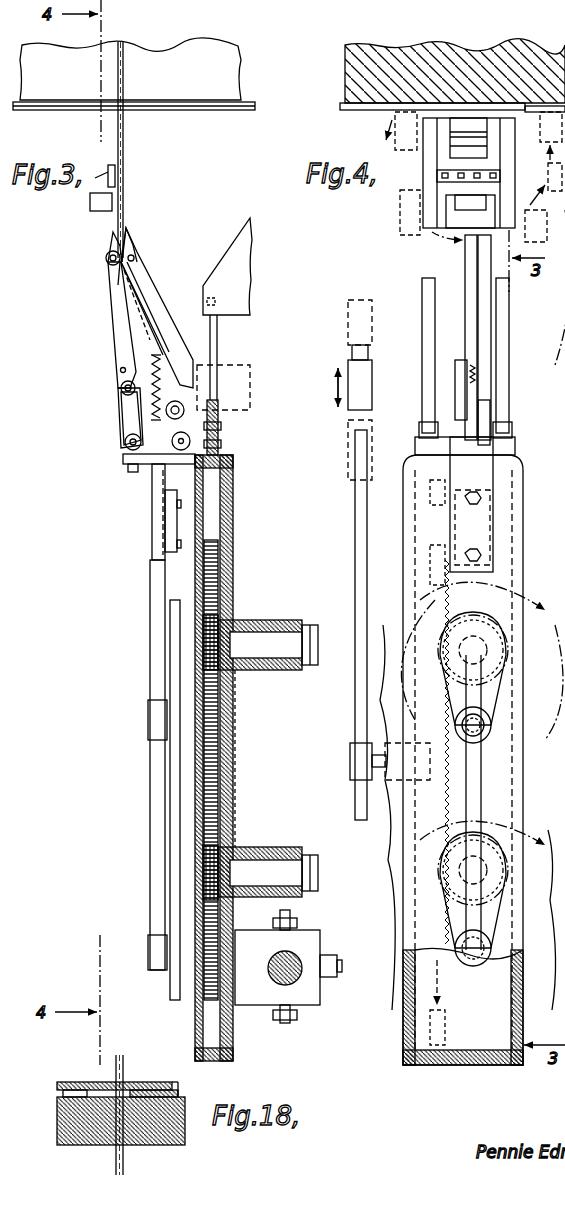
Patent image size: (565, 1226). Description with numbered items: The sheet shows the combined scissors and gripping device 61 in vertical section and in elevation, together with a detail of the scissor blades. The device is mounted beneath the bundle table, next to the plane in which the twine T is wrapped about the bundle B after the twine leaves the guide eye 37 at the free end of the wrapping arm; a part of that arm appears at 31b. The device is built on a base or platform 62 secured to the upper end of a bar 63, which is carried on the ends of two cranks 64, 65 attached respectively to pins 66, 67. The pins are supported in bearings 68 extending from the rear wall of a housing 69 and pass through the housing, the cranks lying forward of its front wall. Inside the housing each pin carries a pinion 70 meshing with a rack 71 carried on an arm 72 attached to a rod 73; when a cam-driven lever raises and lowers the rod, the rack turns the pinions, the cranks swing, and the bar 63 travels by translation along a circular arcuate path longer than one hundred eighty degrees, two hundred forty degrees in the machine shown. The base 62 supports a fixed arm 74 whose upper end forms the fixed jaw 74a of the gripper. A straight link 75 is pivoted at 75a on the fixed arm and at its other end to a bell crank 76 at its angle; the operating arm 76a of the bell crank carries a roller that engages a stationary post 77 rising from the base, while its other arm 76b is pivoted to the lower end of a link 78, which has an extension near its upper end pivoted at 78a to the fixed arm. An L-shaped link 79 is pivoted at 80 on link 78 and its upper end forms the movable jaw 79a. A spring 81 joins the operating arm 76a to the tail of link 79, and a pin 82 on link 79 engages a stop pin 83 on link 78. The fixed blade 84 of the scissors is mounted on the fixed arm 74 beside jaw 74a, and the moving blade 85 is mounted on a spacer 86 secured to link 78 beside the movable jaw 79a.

In FIG. 3, the bundle B is at (228, 77).
In FIG. 3, the twine T is at (124, 150).
In FIG. 18, the twine T is at (124, 1165).
In FIG. 3, the guide eye 37 is at (106, 186).
In FIG. 3, the block 31b is at (102, 205).
In FIG. 3, the combined scissors and gripping device 61 is at (100, 405).
In FIG. 4, the combined scissors and gripping device 61 is at (397, 222).
In FIG. 3, the base or platform 62 is at (152, 488).
In FIG. 4, the base or platform 62 is at (492, 482).
In FIG. 3, the bar 63 is at (156, 766).
In FIG. 3, the crank 64 is at (196, 975).
In FIG. 4, the crank 64 is at (494, 932).
In FIG. 3, the crank 65 is at (180, 732).
In FIG. 4, the crank 65 is at (498, 712).
In FIG. 3, the pin 66 is at (296, 857).
In FIG. 3, the pin 67 is at (276, 635).
In FIG. 3, the bearings 68 is at (285, 670).
In FIG. 3, the housing 69 is at (232, 562).
In FIG. 4, the housing 69 is at (524, 542).
In FIG. 3, the pinion 70 is at (212, 625).
In FIG. 4, the pinion 70 is at (512, 600).
In FIG. 3, the rack 71 is at (212, 1000).
In FIG. 4, the rack 71 is at (436, 816).
In FIG. 4, the arm 72 is at (372, 782).
In FIG. 4, the rod 73 is at (356, 528).
In FIG. 3, the fixed arm 74 is at (158, 322).
In FIG. 4, the fixed arm 74 is at (488, 337).
In FIG. 3, the fixed jaw 74a is at (130, 240).
In FIG. 18, the fixed jaw 74a is at (182, 1135).
In FIG. 3, the straight link 75 is at (196, 418).
In FIG. 4, the straight link 75 is at (462, 452).
In FIG. 3, the pivot 75a is at (190, 442).
In FIG. 3, the bell crank 76 is at (126, 458).
In FIG. 3, the operating arm 76a is at (185, 410).
In FIG. 3, the arm of bell crank 76b is at (124, 420).
In FIG. 4, the arm of bell crank 76b is at (476, 390).
In FIG. 3, the stationary post 77 is at (125, 444).
In FIG. 4, the stationary post 77 is at (492, 410).
In FIG. 3, the link 78 is at (118, 330).
In FIG. 4, the link 78 is at (468, 340).
In FIG. 3, the pivot 78a is at (135, 258).
In FIG. 3, the L-shaped link 79 is at (130, 333).
In FIG. 4, the L-shaped link 79 is at (470, 292).
In FIG. 3, the movable jaw 79a is at (106, 258).
In FIG. 18, the movable jaw 79a is at (85, 1135).
In FIG. 3, the pivot 80 is at (110, 262).
In FIG. 3, the spring 81 is at (162, 378).
In FIG. 3, the pin 82 is at (120, 370).
In FIG. 3, the stop pin 83 is at (121, 388).
In FIG. 18, the fixed blade 84 is at (180, 1090).
In FIG. 18, the moving blade 85 is at (80, 1080).
In FIG. 18, the spacer 86 is at (60, 1096).